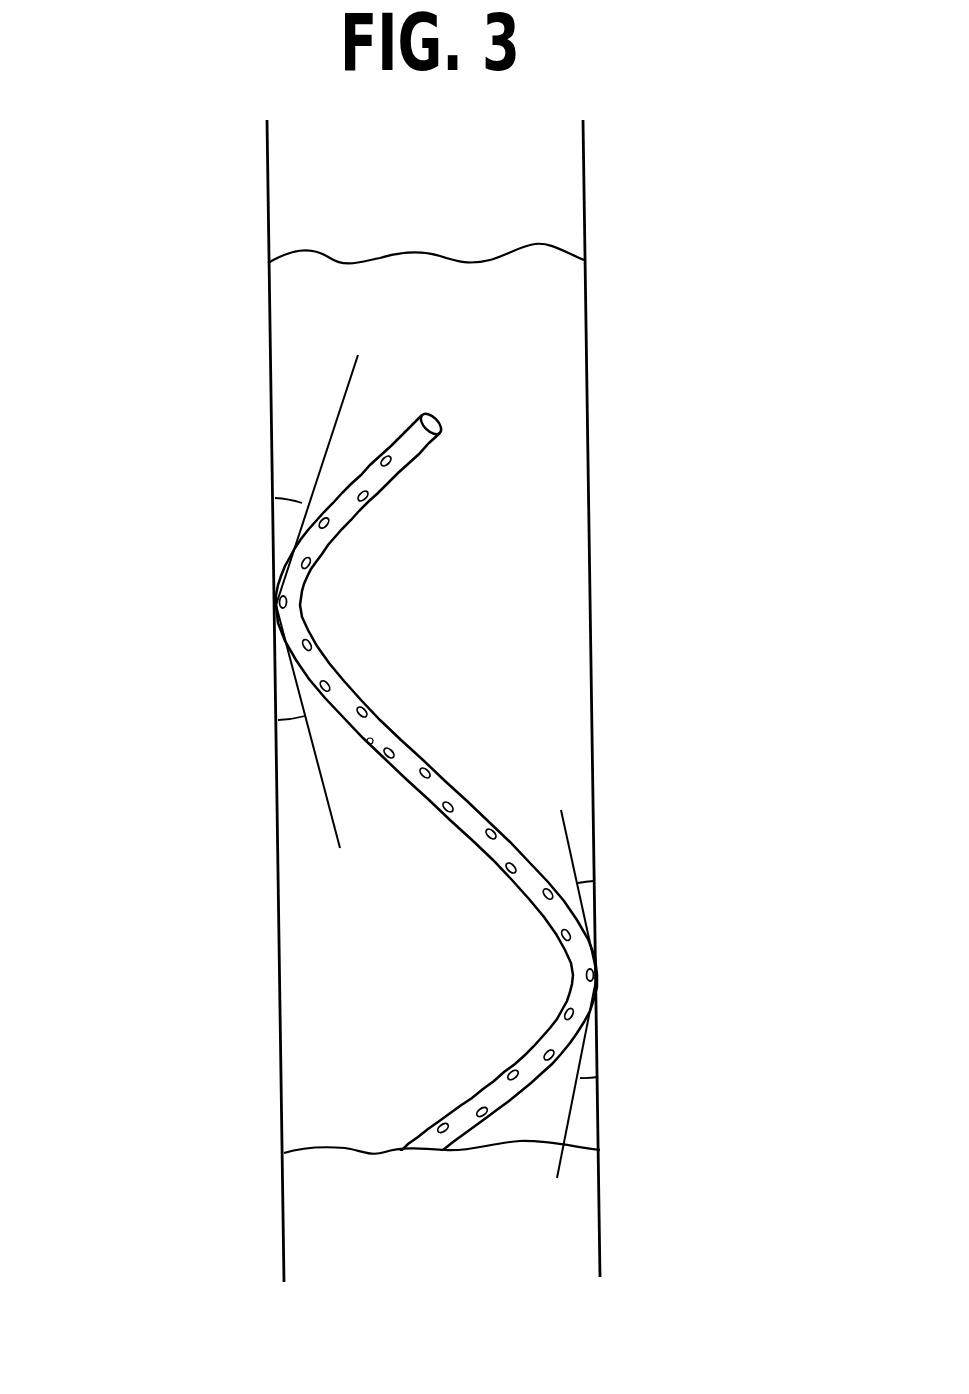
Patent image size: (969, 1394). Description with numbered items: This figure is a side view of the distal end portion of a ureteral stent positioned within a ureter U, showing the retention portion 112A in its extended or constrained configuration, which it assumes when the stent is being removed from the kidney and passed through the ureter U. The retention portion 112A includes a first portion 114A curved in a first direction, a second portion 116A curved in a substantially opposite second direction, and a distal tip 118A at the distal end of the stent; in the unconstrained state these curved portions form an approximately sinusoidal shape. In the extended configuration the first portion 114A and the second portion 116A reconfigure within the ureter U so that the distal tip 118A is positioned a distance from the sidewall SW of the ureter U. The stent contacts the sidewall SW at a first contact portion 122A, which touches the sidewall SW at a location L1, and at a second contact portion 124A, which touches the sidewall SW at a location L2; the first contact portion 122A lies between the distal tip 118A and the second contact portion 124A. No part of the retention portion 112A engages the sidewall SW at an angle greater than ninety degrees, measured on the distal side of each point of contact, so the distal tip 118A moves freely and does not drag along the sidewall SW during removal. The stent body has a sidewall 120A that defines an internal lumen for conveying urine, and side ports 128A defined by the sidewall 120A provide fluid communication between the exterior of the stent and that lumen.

The distal tip 118A is at (438, 412).
The ureter U is at (590, 316).
The sidewall SW is at (268, 355).
The location L1 is at (275, 603).
The location L2 is at (598, 972).
The second portion 116A is at (242, 588).
The first portion 114A is at (614, 1025).
The first contact portion 122A is at (276, 607).
The second contact portion 124A is at (598, 975).
The side ports 128A is at (320, 684).
The sidewall 120A is at (370, 741).
The retention portion 112A is at (518, 709).